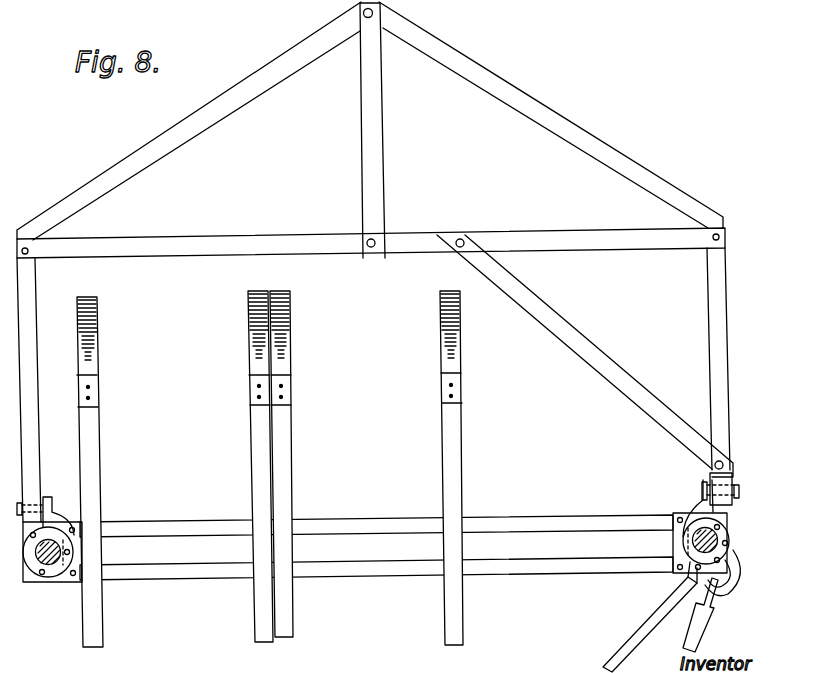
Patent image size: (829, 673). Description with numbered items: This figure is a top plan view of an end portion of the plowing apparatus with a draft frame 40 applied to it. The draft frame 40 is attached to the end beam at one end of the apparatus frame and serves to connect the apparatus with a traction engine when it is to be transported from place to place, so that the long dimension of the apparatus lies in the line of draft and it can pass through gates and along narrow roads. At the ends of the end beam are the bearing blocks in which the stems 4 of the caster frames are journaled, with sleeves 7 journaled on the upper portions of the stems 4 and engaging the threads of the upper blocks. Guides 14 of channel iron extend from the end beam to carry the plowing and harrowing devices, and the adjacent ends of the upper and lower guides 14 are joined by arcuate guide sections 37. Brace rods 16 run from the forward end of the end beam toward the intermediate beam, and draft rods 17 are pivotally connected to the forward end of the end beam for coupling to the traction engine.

The stem 4 is at (54, 566).
The sleeve 7 is at (150, 528).
The guide 14 is at (105, 472).
The brace rod 16 is at (644, 628).
The draft rod 17 is at (697, 632).
The arcuate guide section 37 is at (88, 313).
The draft frame 40 is at (576, 114).